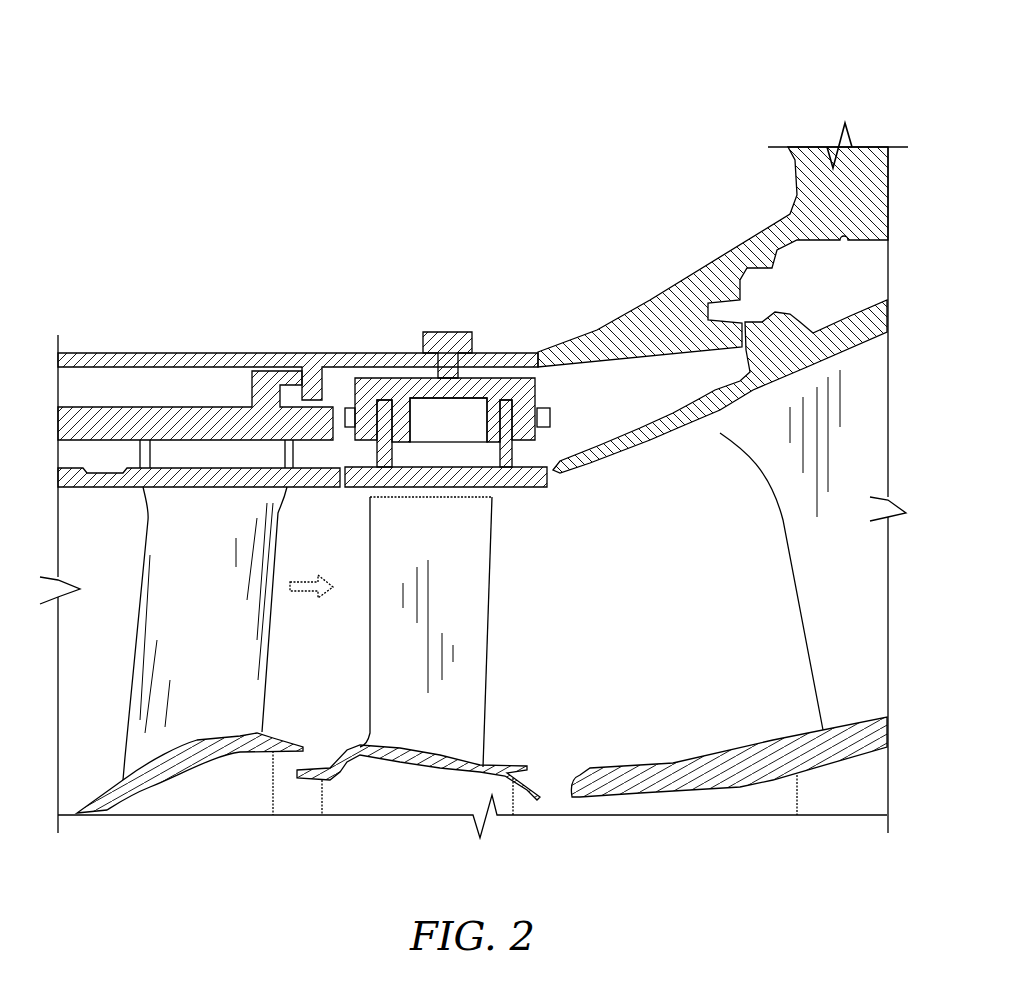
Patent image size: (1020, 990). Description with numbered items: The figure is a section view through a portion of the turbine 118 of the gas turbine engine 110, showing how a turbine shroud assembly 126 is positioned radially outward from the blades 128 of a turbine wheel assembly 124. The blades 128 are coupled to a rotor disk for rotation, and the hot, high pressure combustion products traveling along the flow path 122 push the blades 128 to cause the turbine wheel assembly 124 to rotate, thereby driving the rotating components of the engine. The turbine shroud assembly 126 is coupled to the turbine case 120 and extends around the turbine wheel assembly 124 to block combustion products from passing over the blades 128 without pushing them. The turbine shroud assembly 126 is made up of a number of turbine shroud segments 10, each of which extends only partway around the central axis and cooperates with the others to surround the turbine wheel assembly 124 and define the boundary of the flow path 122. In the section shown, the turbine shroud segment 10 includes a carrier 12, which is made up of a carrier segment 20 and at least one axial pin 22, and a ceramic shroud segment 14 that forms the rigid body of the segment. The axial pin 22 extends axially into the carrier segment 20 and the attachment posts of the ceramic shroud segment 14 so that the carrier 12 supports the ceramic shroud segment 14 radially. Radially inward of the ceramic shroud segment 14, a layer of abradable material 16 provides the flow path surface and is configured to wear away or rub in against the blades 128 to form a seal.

The turbine 118 is at (154, 162).
The gas turbine engine 110 is at (708, 196).
The turbine shroud assembly 126 is at (528, 341).
The turbine case 120 is at (143, 347).
The turbine shroud segment 10 is at (469, 408).
The carrier 12 is at (446, 332).
The carrier segment 20 is at (356, 383).
The axial pin 22 is at (427, 424).
The ceramic shroud segment 14 is at (517, 451).
The layer of abradable material 16 is at (550, 488).
The flow path 122 is at (306, 574).
The turbine wheel assembly 124 is at (755, 525).
The blades 128 is at (492, 655).